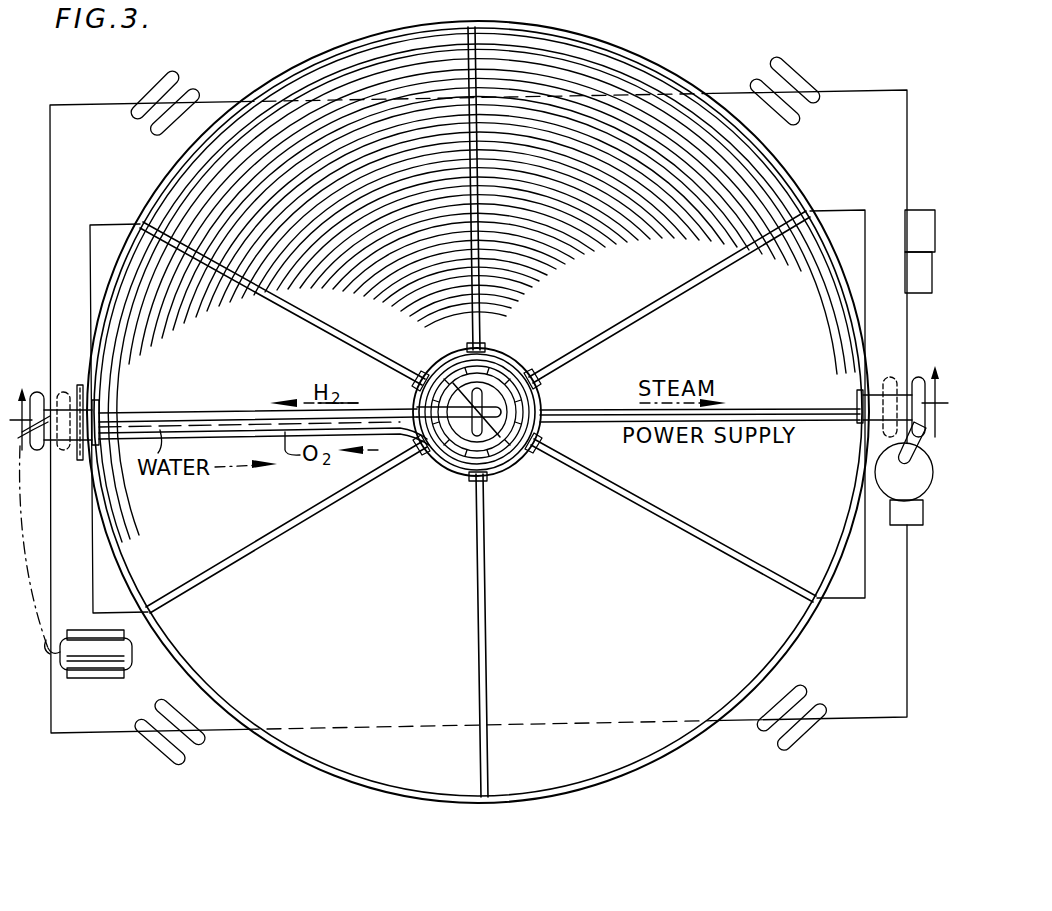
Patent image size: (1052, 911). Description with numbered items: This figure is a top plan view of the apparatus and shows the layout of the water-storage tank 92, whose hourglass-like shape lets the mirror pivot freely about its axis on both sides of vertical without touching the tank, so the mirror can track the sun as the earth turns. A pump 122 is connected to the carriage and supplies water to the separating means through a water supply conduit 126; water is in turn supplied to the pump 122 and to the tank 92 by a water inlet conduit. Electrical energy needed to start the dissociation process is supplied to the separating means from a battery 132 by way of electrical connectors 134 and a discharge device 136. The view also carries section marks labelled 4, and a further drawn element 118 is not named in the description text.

The water-storage tank 92 is at (102, 242).
The drive unit housing 118 is at (923, 294).
The pump 122 is at (95, 661).
The water supply conduit 126 is at (47, 652).
The battery 132 is at (922, 211).
The electrical connectors 134 is at (590, 426).
The discharge device 136 is at (460, 474).
The section line 4- 4 is at (479, 395).